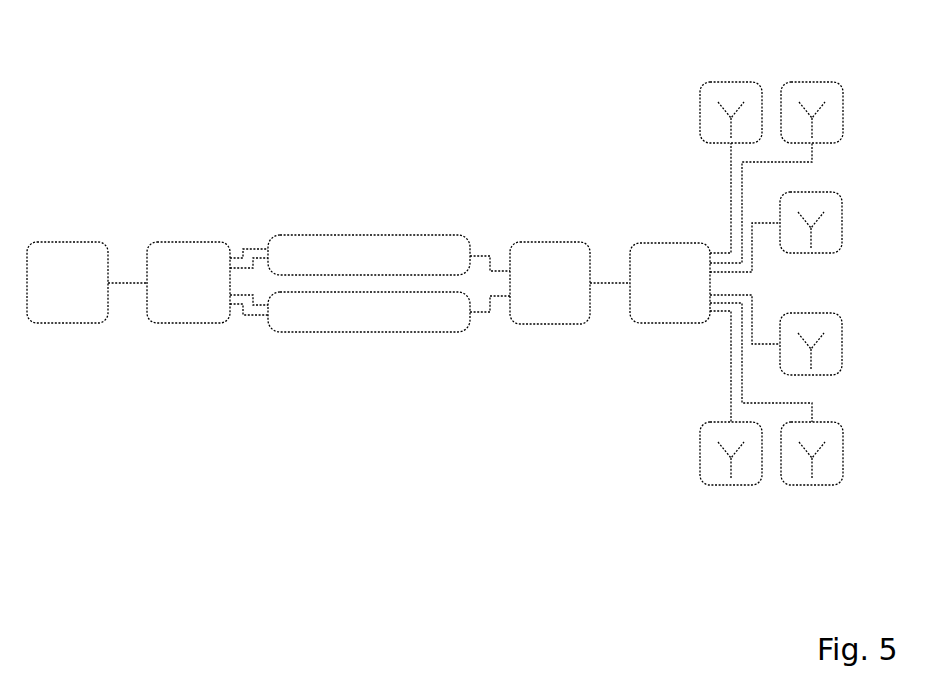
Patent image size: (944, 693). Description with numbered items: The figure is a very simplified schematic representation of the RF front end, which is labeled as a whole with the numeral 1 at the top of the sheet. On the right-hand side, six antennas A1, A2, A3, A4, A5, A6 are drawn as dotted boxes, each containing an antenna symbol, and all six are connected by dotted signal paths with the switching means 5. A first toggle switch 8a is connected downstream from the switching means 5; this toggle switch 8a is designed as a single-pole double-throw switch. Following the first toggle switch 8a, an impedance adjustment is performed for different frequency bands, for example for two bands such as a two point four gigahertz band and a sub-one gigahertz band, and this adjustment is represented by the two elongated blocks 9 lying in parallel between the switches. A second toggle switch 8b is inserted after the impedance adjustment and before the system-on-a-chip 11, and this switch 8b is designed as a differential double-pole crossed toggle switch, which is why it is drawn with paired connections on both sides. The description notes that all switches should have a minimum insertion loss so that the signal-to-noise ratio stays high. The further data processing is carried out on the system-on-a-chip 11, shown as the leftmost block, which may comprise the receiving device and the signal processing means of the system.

The radio system 1 is at (440, 42).
The system-on-a-chip 11 is at (67, 282).
The second toggle switch 8b is at (188, 282).
The transmission line 9 is at (369, 283).
The first toggle switch 8a is at (550, 283).
The switching means 5 is at (670, 283).
The antenna A1 is at (811, 210).
The antenna A2 is at (811, 331).
The antenna A3 is at (812, 99).
The antenna A4 is at (812, 465).
The antenna A5 is at (731, 99).
The antenna A6 is at (731, 465).